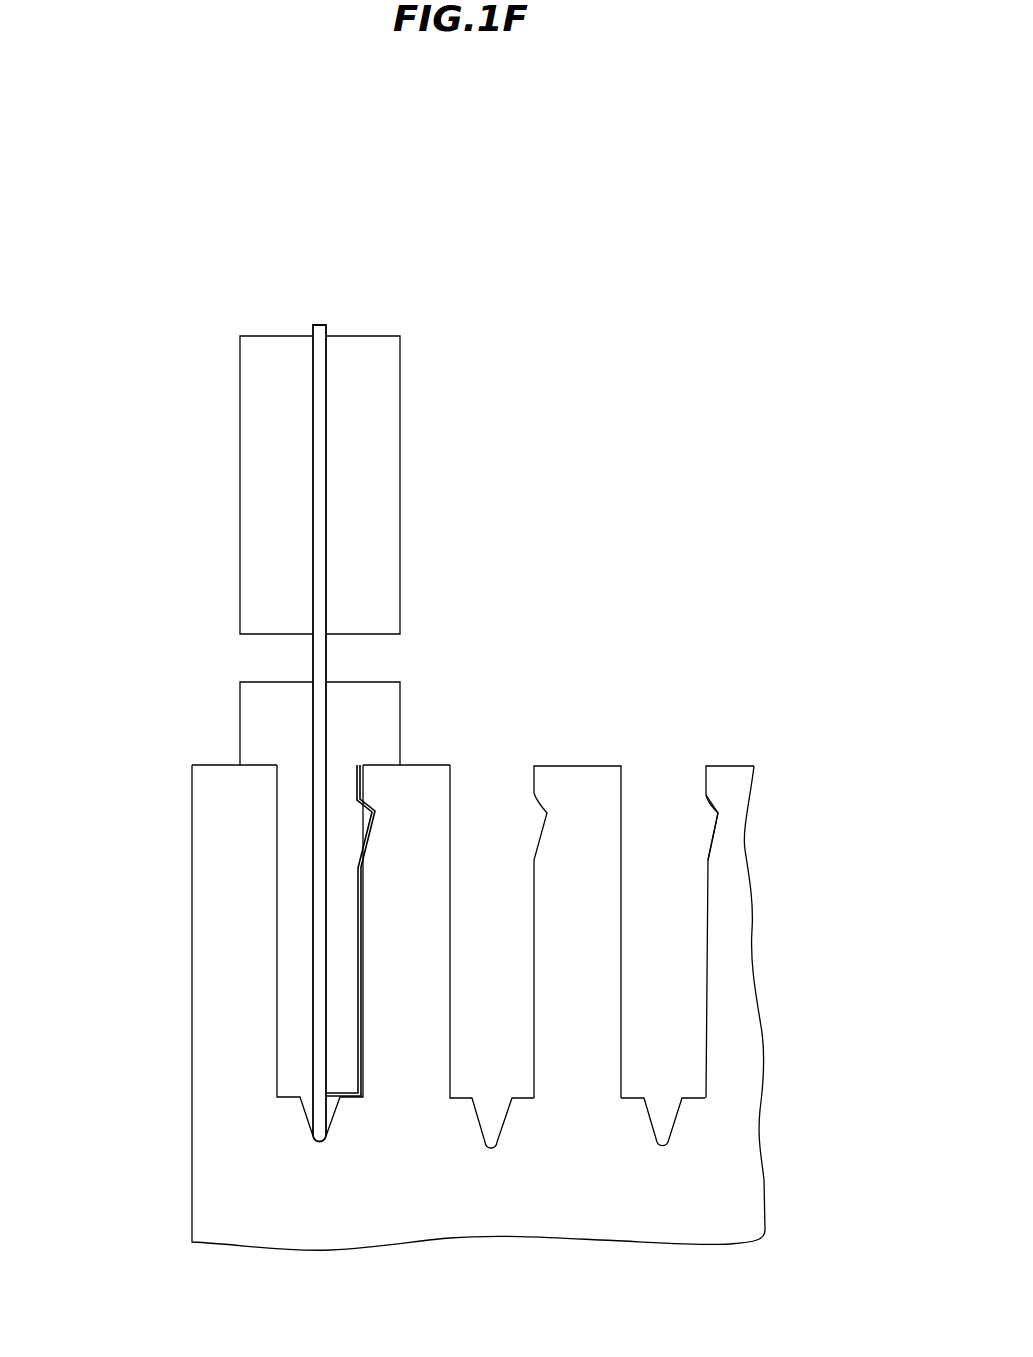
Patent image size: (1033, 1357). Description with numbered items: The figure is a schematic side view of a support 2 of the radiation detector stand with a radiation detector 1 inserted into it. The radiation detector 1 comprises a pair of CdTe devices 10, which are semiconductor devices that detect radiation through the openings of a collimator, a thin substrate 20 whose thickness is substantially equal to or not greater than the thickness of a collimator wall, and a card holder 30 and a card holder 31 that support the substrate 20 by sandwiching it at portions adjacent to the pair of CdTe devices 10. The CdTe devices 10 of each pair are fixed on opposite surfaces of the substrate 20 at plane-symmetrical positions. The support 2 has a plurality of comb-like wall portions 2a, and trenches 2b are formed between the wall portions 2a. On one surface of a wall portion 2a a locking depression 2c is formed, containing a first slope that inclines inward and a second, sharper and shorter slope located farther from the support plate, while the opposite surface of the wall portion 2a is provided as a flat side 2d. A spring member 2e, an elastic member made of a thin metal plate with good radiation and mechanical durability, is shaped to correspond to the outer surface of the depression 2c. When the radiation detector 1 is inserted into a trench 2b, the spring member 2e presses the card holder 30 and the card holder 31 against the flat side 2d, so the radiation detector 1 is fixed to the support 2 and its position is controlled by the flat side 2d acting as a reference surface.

The radiation detector 1 is at (424, 297).
The CdTe device 10 is at (271, 350).
The substrate 20 is at (320, 324).
The card holder 30 is at (256, 723).
The card holder 31 is at (384, 723).
The support 2 is at (215, 983).
The wall portion 2a is at (575, 780).
The trench 2b is at (486, 810).
The depression 2c is at (716, 811).
The flat side 2d is at (280, 897).
The spring member 2e is at (360, 1014).